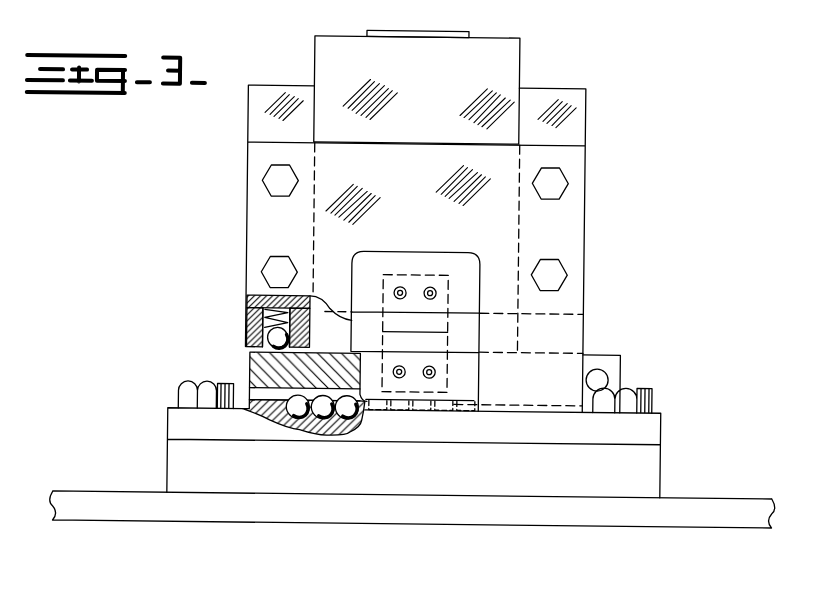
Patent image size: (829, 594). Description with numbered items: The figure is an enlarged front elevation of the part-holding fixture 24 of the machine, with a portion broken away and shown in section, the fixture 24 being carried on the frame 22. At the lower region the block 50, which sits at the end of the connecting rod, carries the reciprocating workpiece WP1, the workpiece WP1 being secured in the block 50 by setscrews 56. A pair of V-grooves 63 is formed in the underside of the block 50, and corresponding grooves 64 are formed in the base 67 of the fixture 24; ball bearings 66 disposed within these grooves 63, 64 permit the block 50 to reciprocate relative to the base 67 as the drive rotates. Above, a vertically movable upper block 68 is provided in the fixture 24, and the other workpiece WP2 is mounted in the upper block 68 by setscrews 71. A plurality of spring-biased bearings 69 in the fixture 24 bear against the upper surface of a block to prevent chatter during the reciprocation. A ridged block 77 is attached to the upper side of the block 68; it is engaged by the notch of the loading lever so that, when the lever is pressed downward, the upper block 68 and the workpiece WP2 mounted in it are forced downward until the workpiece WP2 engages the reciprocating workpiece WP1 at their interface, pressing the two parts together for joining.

The frame 22 is at (687, 503).
The fixture 24 is at (588, 204).
The block 50 is at (258, 364).
The setscrews 56 is at (398, 366).
The V-grooves 63 is at (258, 395).
The grooves 64 is at (332, 425).
The ball bearings 66 is at (388, 407).
The base 67 is at (650, 430).
The vertically movable block 68 is at (573, 301).
The spring-biased bearings 69 is at (268, 338).
The setscrews 71 is at (394, 292).
The ridged block 77 is at (416, 27).
The workpiece WP1 is at (440, 343).
The workpiece WP2 is at (443, 323).